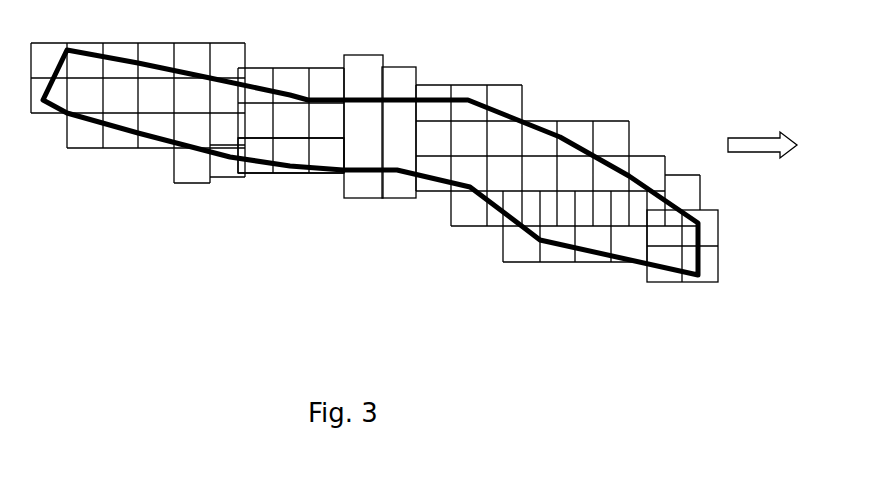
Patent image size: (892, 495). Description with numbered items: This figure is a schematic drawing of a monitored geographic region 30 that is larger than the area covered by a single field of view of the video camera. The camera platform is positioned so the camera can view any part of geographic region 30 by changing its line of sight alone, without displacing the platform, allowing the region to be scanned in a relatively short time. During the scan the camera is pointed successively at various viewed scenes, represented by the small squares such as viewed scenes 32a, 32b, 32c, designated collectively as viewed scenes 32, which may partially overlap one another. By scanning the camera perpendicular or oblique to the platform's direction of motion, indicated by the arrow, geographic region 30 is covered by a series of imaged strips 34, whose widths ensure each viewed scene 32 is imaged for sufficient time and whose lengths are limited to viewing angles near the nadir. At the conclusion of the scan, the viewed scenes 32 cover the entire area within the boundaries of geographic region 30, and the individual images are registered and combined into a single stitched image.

The geographic region 30 is at (603, 157).
The viewed scenes 32 is at (420, 173).
The viewed scene 32a is at (288, 125).
The viewed scene 32b is at (323, 122).
The viewed scene 32c is at (323, 153).
The imaged strips 34 is at (360, 198).